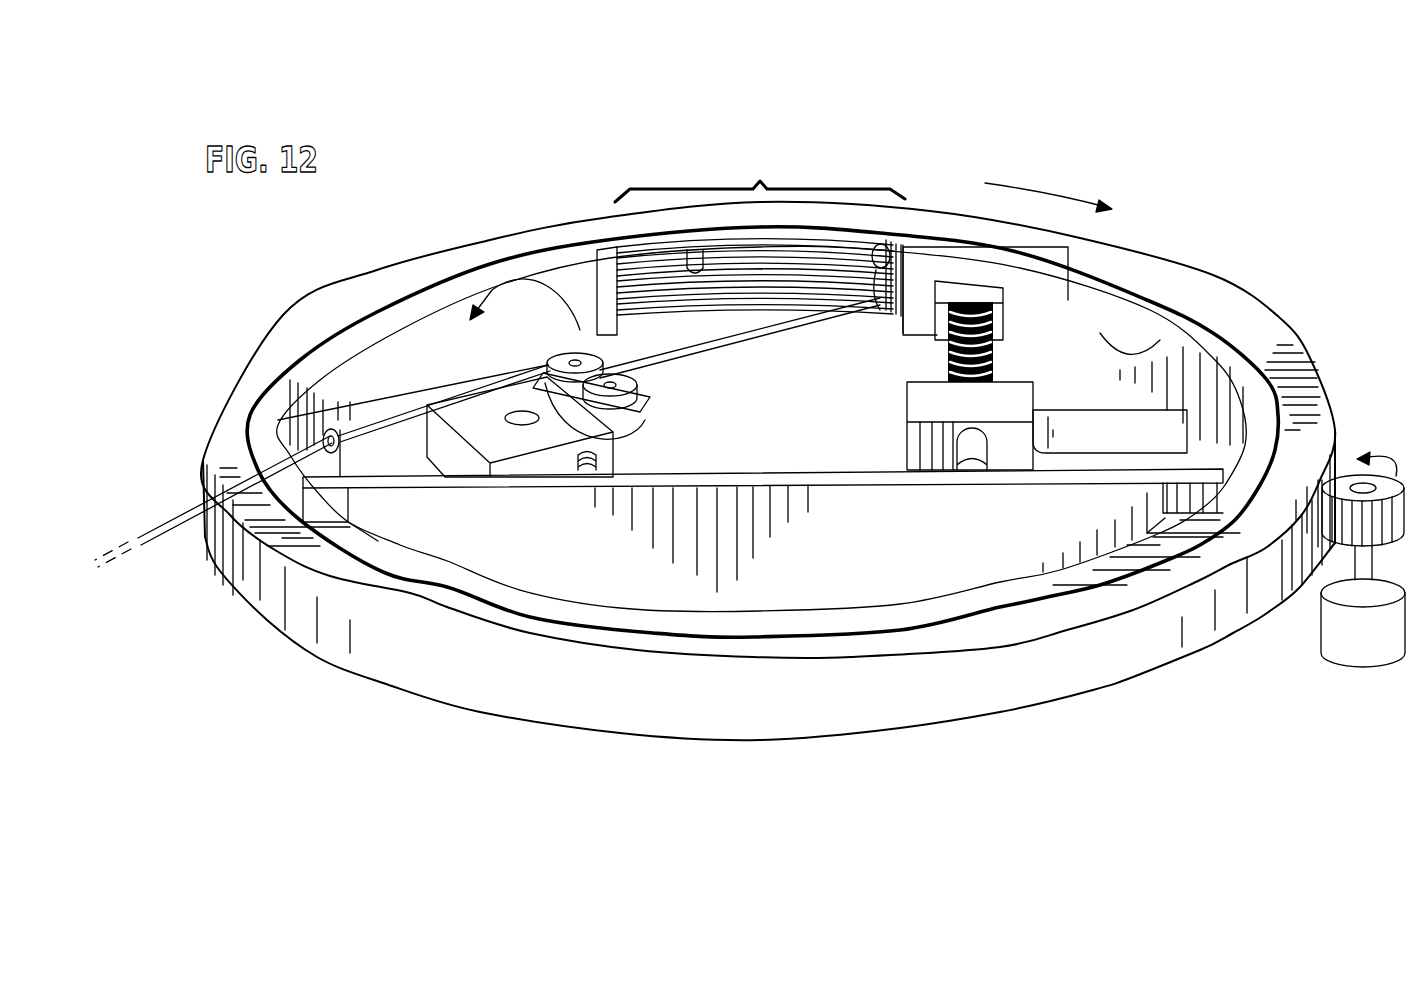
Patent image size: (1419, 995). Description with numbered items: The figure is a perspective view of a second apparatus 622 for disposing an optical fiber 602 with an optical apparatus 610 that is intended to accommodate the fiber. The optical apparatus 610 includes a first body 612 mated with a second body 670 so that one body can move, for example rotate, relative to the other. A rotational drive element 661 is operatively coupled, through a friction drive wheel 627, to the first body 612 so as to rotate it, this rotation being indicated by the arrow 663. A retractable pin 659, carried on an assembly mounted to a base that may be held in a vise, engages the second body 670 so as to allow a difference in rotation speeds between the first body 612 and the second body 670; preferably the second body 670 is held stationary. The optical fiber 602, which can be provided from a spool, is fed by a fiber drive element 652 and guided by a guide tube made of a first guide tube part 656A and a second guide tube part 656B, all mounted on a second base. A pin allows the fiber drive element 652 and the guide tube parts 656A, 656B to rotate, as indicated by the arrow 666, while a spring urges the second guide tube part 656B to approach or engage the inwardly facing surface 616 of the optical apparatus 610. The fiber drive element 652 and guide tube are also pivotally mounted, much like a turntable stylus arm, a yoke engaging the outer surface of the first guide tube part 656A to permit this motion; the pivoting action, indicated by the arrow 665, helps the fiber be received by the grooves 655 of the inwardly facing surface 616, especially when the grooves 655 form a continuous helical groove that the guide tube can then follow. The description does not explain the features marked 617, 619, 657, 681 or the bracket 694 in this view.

The optical fiber 602 is at (157, 542).
The optical apparatus 610 is at (1043, 706).
The first body 612 is at (1313, 427).
The inwardly facing surface 616 is at (683, 260).
The floor edge 617 is at (900, 535).
The extension bar 619 is at (1120, 427).
The second apparatus 622 is at (754, 313).
The friction drive wheel 627 is at (1350, 527).
The fiber drive element 652 is at (590, 353).
The grooves 655 is at (878, 262).
The first guide tube part 656A is at (395, 428).
The second guide tube part 656B is at (777, 325).
The nozzle 657 is at (326, 430).
The retractable pin 659 is at (978, 290).
The rotational drive element 661 is at (1352, 632).
The rotation of the first body 663 is at (1043, 188).
The pivoting action 665 is at (470, 305).
The rotation of the fiber drive element and guide tube parts 666 is at (497, 370).
The second body 670 is at (1257, 403).
The inner wall 681 is at (1167, 357).
The magnet span 694 is at (760, 175).